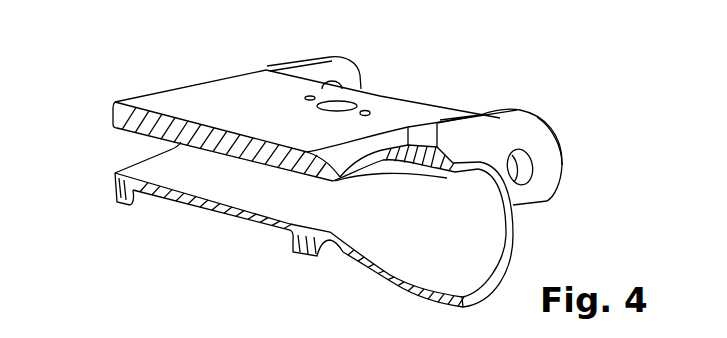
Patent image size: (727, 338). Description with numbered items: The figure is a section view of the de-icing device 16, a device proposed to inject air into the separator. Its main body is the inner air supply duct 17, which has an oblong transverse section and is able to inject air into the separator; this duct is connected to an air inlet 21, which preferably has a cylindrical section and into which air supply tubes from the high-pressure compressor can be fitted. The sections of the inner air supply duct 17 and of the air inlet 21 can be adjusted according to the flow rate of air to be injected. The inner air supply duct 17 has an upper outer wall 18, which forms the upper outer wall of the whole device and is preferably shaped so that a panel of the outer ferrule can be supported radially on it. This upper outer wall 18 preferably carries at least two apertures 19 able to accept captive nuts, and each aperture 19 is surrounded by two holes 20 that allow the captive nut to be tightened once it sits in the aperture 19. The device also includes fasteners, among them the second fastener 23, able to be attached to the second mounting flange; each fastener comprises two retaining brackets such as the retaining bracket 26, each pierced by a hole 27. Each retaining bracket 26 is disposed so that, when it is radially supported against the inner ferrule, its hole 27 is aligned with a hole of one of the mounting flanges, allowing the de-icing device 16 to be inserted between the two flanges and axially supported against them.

The de-icing device 16 is at (103, 148).
The inner air supply duct 17 is at (270, 189).
The upper outer wall 18 is at (212, 100).
The aperture 19 is at (340, 104).
The hole 20 is at (368, 112).
The air inlet 21 is at (465, 160).
The second fastener 23 is at (517, 132).
The retaining bracket 26 is at (556, 156).
The hole 27 is at (527, 167).